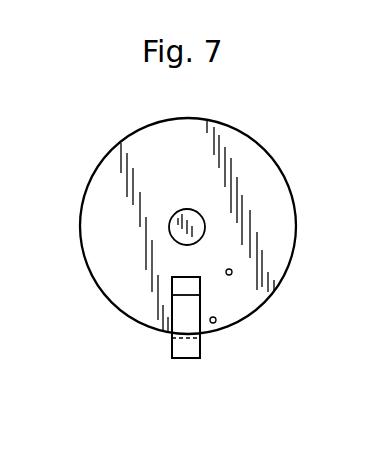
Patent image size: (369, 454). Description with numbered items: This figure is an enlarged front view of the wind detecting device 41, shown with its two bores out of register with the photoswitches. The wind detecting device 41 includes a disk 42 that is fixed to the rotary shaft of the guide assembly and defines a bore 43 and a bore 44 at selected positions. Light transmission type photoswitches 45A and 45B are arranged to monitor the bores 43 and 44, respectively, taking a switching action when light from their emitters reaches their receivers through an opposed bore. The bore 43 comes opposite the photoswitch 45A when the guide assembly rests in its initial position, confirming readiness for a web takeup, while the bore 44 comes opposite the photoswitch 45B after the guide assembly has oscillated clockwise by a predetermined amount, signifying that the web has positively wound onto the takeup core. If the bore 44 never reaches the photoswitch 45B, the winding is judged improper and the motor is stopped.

The wind detecting device 41 is at (80, 340).
The disk 42 is at (100, 182).
The bore 43 is at (216, 320).
The bore 44 is at (232, 275).
The photoswitch 45A is at (189, 321).
The photoswitch 45B is at (175, 285).